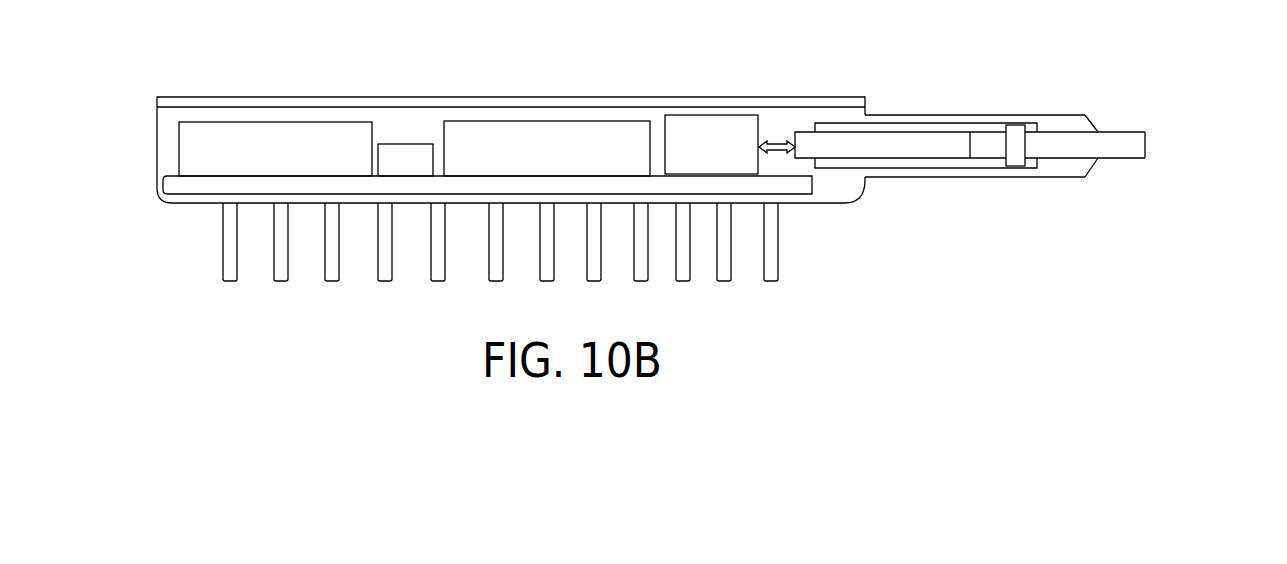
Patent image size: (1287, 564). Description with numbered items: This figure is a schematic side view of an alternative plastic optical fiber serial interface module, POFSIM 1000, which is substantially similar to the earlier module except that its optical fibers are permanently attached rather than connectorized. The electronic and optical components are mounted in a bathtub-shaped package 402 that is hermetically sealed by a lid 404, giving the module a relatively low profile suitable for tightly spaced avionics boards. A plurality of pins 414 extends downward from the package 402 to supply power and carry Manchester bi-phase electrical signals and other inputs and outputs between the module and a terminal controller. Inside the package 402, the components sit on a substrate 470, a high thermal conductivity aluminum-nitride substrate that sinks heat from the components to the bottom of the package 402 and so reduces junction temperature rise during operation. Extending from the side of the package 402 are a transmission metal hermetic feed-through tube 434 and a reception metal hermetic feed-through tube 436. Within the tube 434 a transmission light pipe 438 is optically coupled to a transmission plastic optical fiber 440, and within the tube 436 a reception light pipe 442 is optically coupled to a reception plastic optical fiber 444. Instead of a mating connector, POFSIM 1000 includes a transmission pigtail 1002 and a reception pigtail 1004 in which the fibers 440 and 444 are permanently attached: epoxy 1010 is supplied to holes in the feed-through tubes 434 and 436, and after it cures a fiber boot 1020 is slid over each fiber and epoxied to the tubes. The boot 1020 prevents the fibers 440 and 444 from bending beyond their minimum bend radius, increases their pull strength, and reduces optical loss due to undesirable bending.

The package 402 is at (850, 203).
The lid 404 is at (188, 103).
The pins 414 is at (222, 271).
The substrate 470 is at (172, 183).
The transmission metal hermetic feed-through tube 434 is at (902, 125).
The reception metal hermetic feed-through tube 436 is at (972, 125).
The transmission light pipe 438 is at (916, 147).
The transmission plastic optical fiber 440 is at (1062, 147).
The reception light pipe 442 is at (845, 147).
The reception plastic optical fiber 444 is at (1130, 148).
The POFSIM 1000 is at (669, 163).
The transmission pigtail 1002 is at (1087, 105).
The reception pigtail 1004 is at (1019, 153).
The epoxy 1010 is at (1015, 160).
The fiber boot 1020 is at (1082, 128).